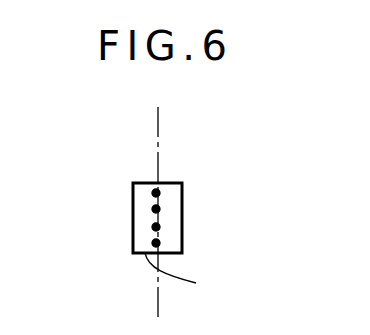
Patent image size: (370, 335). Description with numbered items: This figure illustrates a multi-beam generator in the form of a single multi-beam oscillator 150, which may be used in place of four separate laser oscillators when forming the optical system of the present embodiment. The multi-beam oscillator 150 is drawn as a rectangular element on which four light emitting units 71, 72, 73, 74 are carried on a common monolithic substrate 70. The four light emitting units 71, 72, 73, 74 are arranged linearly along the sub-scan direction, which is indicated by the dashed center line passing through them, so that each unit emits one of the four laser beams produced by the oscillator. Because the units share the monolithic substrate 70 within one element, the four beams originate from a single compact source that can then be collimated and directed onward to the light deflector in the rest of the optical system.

The multi-beam oscillator 150 is at (146, 178).
The monolithic substrate 70 is at (188, 278).
The light emitting unit 71 is at (156, 243).
The light emitting unit 72 is at (156, 227).
The light emitting unit 73 is at (156, 209).
The light emitting unit 74 is at (156, 193).